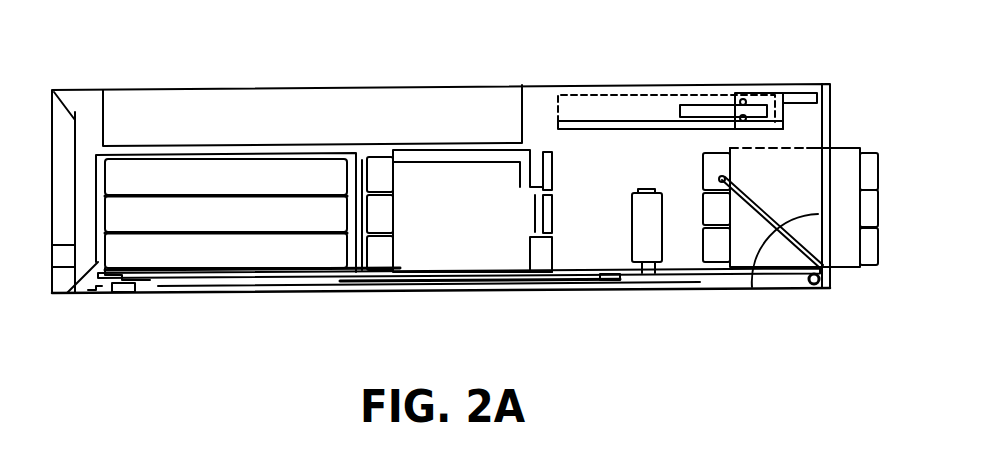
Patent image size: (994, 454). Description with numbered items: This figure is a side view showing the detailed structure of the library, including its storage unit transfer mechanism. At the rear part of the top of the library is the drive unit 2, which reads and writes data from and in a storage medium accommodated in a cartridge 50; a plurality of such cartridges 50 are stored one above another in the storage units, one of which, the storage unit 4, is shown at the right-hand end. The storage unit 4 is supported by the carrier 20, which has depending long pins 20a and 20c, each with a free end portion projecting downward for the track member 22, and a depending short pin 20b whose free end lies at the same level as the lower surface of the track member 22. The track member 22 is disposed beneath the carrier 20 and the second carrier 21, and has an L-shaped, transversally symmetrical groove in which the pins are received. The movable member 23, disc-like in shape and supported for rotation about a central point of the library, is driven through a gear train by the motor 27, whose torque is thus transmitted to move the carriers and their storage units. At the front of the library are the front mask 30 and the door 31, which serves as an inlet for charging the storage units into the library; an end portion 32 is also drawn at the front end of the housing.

The drive unit 2 is at (182, 100).
The storage unit 4 is at (852, 258).
The carrier 20 is at (62, 296).
The long pin 20a is at (242, 286).
The short pin 20b is at (208, 293).
The long pin 20c is at (115, 290).
The carrier 21 is at (508, 247).
The track member 22 is at (145, 280).
The movable member 23 is at (427, 282).
The motor 27 is at (676, 274).
The front mask 30 is at (838, 112).
The door 31 is at (775, 258).
The front bezel end portion 32 is at (53, 89).
The cartridge 50 is at (290, 172).